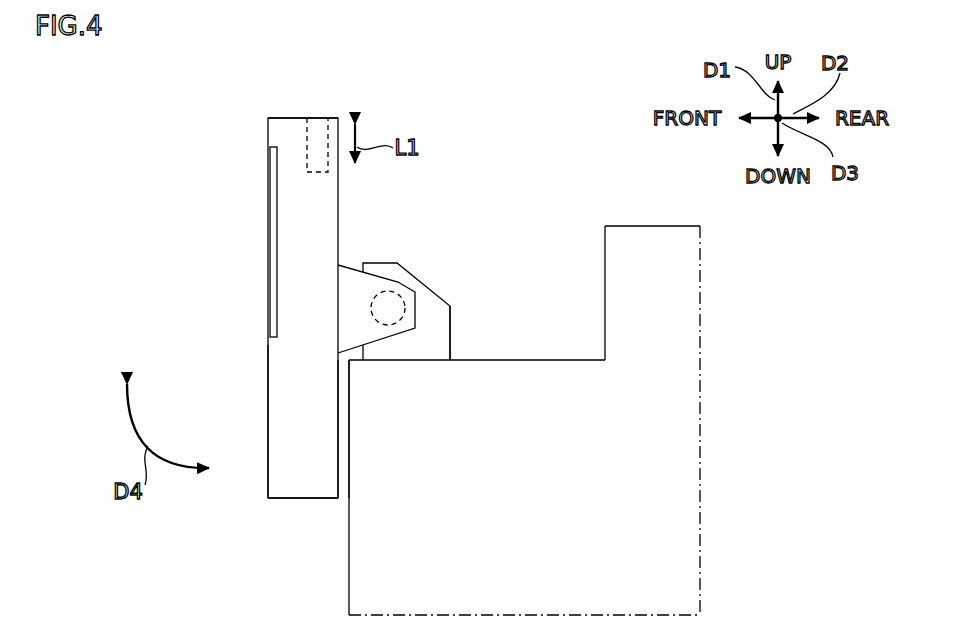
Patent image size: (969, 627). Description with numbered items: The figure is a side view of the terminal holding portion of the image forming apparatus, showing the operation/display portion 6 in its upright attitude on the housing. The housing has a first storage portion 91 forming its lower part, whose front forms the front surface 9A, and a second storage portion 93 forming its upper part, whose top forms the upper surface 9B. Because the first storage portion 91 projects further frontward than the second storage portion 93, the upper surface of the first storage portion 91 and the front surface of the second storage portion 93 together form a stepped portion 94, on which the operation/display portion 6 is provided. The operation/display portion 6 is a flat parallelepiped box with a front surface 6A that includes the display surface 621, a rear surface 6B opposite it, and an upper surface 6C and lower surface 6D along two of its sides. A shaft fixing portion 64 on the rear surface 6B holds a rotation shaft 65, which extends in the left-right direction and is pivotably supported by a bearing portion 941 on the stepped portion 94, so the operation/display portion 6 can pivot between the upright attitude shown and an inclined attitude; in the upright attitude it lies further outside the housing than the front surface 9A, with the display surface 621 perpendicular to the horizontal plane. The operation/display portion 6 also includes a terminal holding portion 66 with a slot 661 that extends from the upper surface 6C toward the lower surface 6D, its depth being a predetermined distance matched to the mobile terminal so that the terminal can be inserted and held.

The operation/display portion 6 is at (256, 89).
The front surface 6A is at (268, 385).
The rear surface 6B is at (338, 458).
The upper surface 6C is at (292, 118).
The lower surface 6D is at (287, 502).
The display surface 621 is at (268, 165).
The terminal holding portion 66 is at (369, 73).
The slot 661 is at (318, 111).
The shaft fixing portion 64 is at (413, 330).
The rotation shaft 65 is at (392, 326).
The front surface 9A is at (349, 583).
The upper surface 9B is at (657, 226).
The first storage portion 91 is at (338, 543).
The second storage portion 93 is at (595, 278).
The stepped portion 94 is at (498, 236).
The bearing portion 941 is at (451, 330).